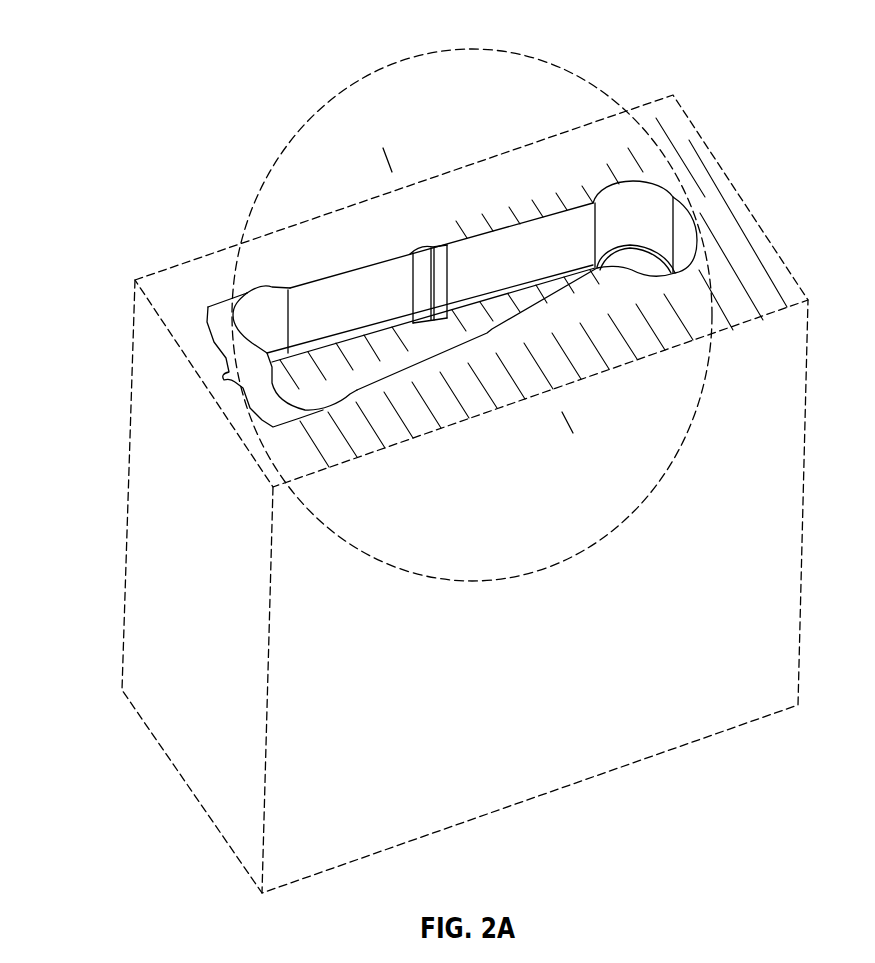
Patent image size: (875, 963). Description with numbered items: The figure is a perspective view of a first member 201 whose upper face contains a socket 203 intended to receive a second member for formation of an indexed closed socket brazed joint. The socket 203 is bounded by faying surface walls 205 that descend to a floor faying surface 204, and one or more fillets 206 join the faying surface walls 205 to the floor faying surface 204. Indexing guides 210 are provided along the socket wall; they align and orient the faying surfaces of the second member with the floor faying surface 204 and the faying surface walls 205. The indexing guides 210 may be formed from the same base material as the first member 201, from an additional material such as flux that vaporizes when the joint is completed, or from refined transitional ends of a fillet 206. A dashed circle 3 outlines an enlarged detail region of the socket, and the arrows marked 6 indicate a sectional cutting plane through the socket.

The first member 201 is at (170, 273).
The socket 203 is at (214, 377).
The floor faying surface 204 is at (632, 266).
The faying surface walls 205 is at (327, 307).
The fillets 206 is at (527, 287).
The indexing guides 210 is at (453, 230).
The detail region (FIG. 3) 3 is at (577, 80).
The section line 6- 6 is at (383, 148).